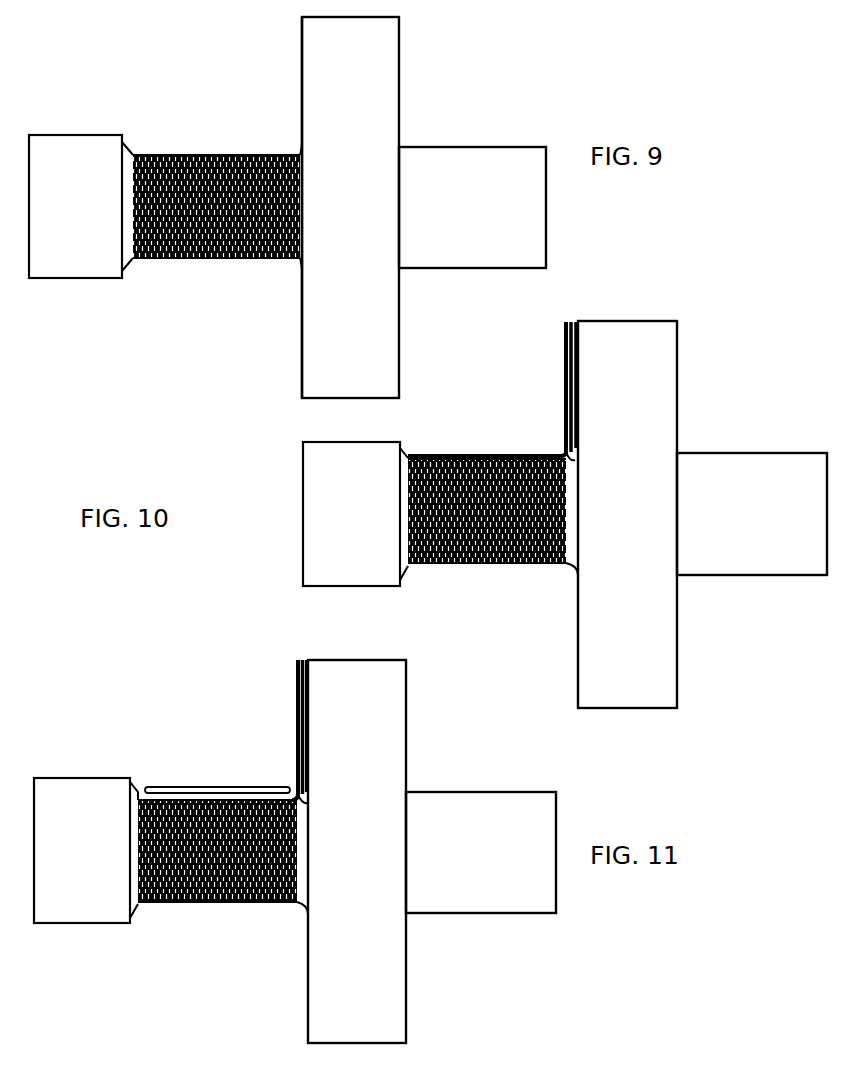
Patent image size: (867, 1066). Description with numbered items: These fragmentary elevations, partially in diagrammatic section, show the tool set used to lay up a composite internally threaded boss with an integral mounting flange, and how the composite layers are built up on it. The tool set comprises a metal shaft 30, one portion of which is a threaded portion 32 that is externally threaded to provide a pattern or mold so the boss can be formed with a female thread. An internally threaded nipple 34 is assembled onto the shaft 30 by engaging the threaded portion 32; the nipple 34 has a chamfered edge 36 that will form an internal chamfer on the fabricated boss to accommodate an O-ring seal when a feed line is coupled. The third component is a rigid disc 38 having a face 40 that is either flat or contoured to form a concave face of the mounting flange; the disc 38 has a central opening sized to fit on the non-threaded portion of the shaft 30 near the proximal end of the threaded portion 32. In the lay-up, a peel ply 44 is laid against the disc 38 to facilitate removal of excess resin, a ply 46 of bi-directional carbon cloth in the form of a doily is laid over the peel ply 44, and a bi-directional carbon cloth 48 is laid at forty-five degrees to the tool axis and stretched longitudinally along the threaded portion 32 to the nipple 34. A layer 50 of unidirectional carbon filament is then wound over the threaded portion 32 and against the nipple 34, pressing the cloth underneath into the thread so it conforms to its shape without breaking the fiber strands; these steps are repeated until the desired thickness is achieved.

In FIG. 9, the metal shaft 30 is at (438, 147).
In FIG. 10, the metal shaft 30 is at (715, 452).
In FIG. 11, the metal shaft 30 is at (463, 792).
In FIG. 9, the threaded portion 32 is at (172, 155).
In FIG. 10, the threaded portion 32 is at (453, 565).
In FIG. 11, the threaded portion 32 is at (167, 903).
In FIG. 9, the internally threaded nipple 34 is at (52, 135).
In FIG. 10, the internally threaded nipple 34 is at (328, 452).
In FIG. 11, the internally threaded nipple 34 is at (43, 778).
In FIG. 9, the chamfered edge 36 is at (130, 143).
In FIG. 10, the chamfered edge 36 is at (406, 448).
In FIG. 11, the chamfered edge 36 is at (133, 787).
In FIG. 9, the rigid disc 38 is at (378, 50).
In FIG. 10, the rigid disc 38 is at (660, 321).
In FIG. 11, the rigid disc 38 is at (357, 660).
In FIG. 9, the face 40 is at (302, 72).
In FIG. 10, the peel ply 44 is at (577, 322).
In FIG. 11, the peel ply 44 is at (306, 660).
In FIG. 10, the ply of bi-directional carbon cloth 46 is at (573, 322).
In FIG. 11, the ply of bi-directional carbon cloth 46 is at (302, 660).
In FIG. 10, the bi-directional carbon cloth 48 is at (564, 322).
In FIG. 11, the bi-directional carbon cloth 48 is at (297, 660).
In FIG. 11, the layer of unidirectional carbon filament 50 is at (175, 788).